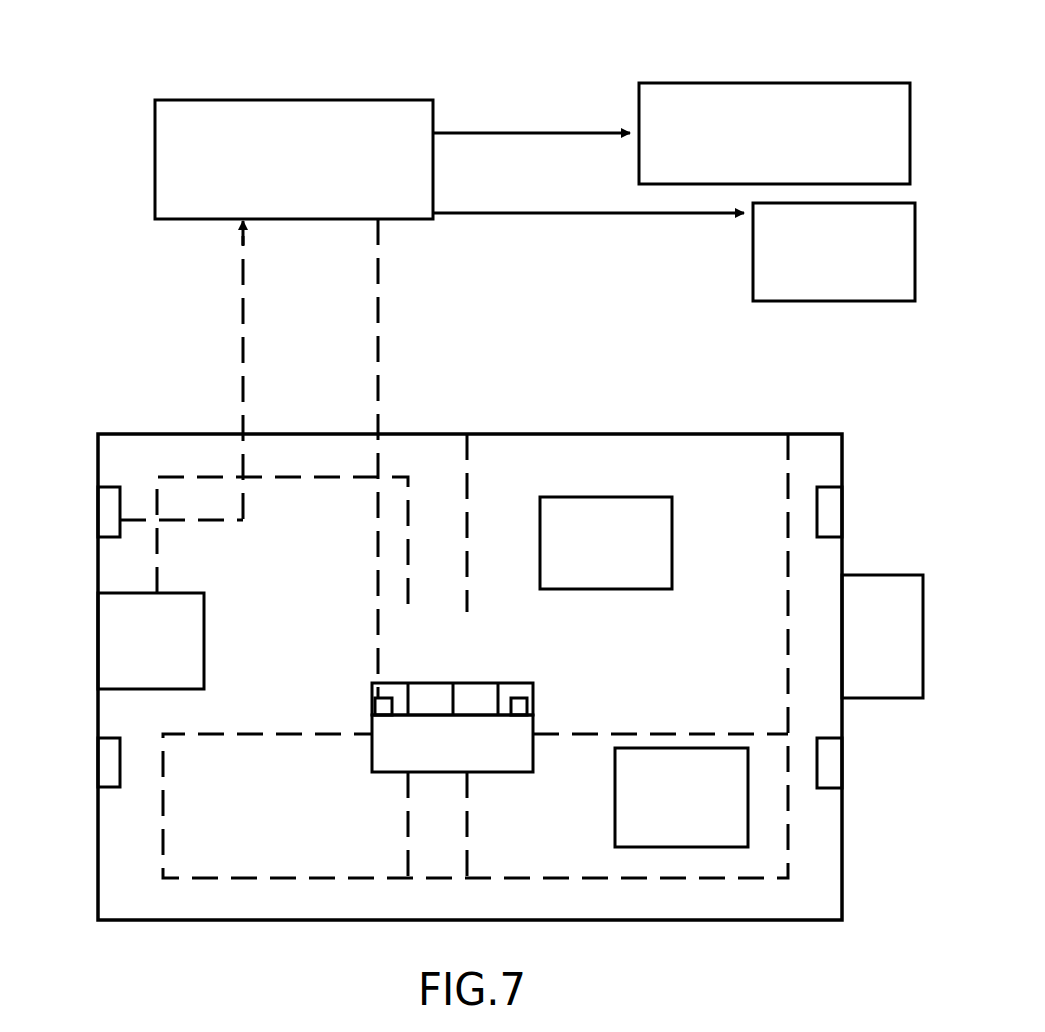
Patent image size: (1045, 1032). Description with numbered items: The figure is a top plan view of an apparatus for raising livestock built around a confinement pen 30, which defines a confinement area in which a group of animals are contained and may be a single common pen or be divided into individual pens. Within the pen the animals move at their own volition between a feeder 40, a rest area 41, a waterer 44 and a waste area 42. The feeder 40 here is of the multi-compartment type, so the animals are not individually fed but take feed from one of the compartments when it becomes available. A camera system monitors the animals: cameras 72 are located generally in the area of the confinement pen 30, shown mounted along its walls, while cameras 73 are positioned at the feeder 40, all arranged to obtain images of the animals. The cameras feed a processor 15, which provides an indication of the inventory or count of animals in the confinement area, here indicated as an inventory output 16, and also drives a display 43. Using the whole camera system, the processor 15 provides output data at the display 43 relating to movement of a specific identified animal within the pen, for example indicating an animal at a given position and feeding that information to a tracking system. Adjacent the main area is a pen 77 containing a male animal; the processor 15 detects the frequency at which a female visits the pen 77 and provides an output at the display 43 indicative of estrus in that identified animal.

The processor 15 is at (218, 117).
The inventory 16 is at (752, 98).
The display 43 is at (783, 292).
The confinement pen 30 is at (98, 564).
The cameras 72 is at (103, 518).
The waterer 44 is at (190, 677).
The rest area 41 is at (602, 510).
The feeder 40 is at (515, 726).
The cameras 73 is at (387, 698).
The waste area 42 is at (710, 758).
The pen 77 is at (906, 687).